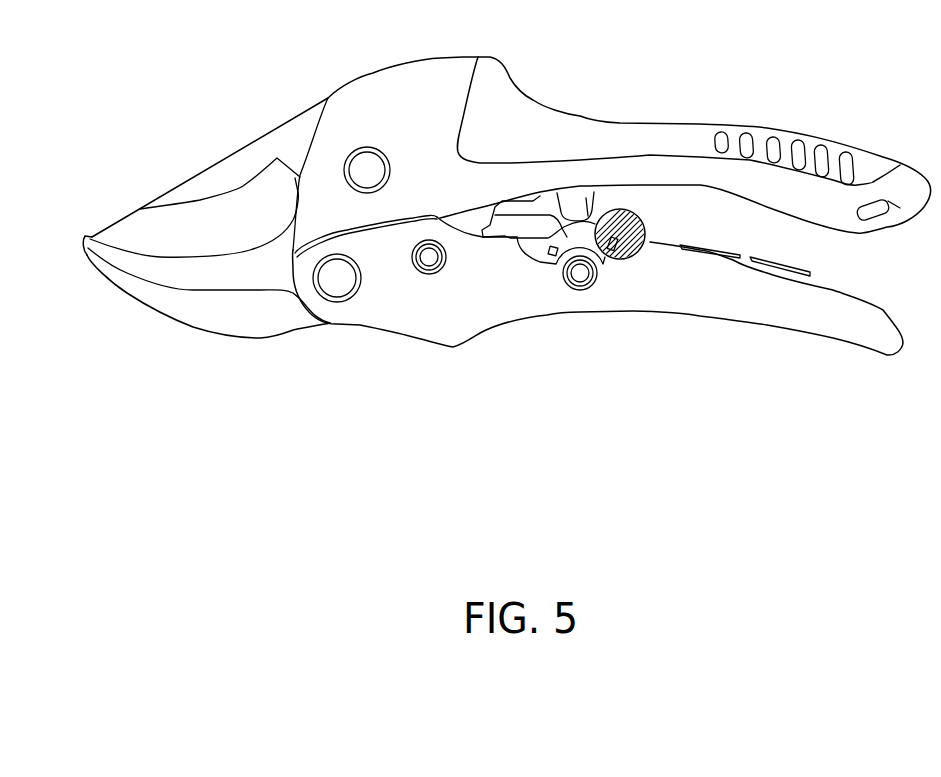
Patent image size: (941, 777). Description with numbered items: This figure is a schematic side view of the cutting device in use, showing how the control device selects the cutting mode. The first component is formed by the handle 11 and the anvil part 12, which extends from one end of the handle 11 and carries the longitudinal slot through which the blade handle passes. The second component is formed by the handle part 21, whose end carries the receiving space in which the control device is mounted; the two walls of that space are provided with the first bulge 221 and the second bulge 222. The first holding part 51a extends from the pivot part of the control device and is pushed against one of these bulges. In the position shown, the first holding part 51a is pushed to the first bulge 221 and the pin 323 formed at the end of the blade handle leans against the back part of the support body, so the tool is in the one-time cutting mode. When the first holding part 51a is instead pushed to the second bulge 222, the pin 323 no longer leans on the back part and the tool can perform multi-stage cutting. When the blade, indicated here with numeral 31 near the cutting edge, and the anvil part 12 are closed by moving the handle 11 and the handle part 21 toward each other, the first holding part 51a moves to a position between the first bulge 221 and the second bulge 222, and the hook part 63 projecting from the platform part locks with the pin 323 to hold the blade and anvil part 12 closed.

The handle 11 is at (698, 122).
The anvil part 12 is at (117, 277).
The handle part 21 is at (745, 320).
The blade 31 is at (160, 192).
The first holding part 51a is at (643, 240).
The hook part 63 is at (590, 220).
The first bulge 221 is at (553, 258).
The second bulge 222 is at (615, 250).
The pin 323 is at (578, 215).